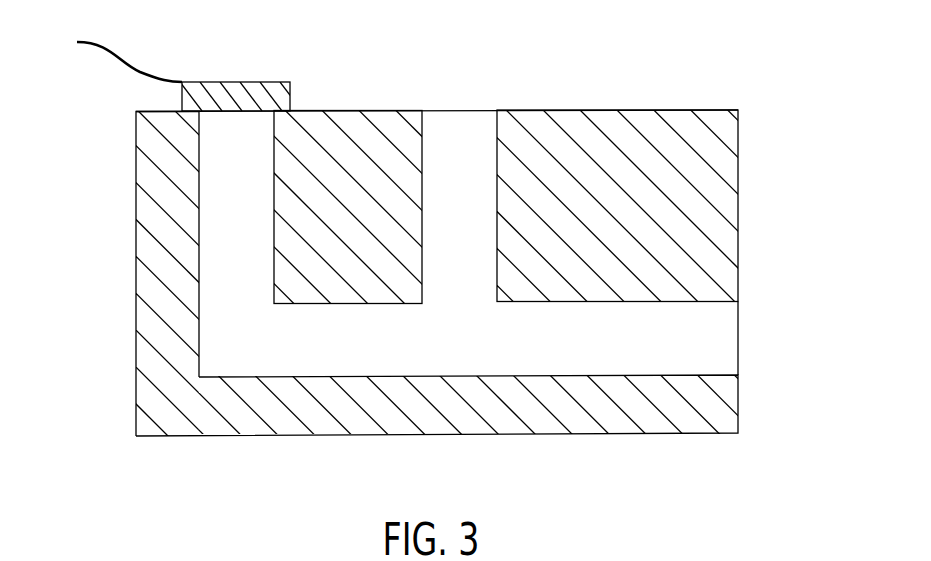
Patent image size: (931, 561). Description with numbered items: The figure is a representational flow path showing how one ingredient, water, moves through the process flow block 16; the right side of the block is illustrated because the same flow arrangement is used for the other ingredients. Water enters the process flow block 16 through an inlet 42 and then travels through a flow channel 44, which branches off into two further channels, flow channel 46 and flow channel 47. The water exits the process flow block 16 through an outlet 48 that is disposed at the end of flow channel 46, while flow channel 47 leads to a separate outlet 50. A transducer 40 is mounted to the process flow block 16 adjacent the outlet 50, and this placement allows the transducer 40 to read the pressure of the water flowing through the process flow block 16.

The process flow block 16 is at (136, 363).
The transducer 40 is at (213, 82).
The inlet 42 is at (745, 346).
The flow channel 44 is at (521, 377).
The flow channel 46 is at (498, 229).
The flow channel 47 is at (217, 263).
The outlet 48 is at (473, 110).
The outlet 50 is at (240, 121).